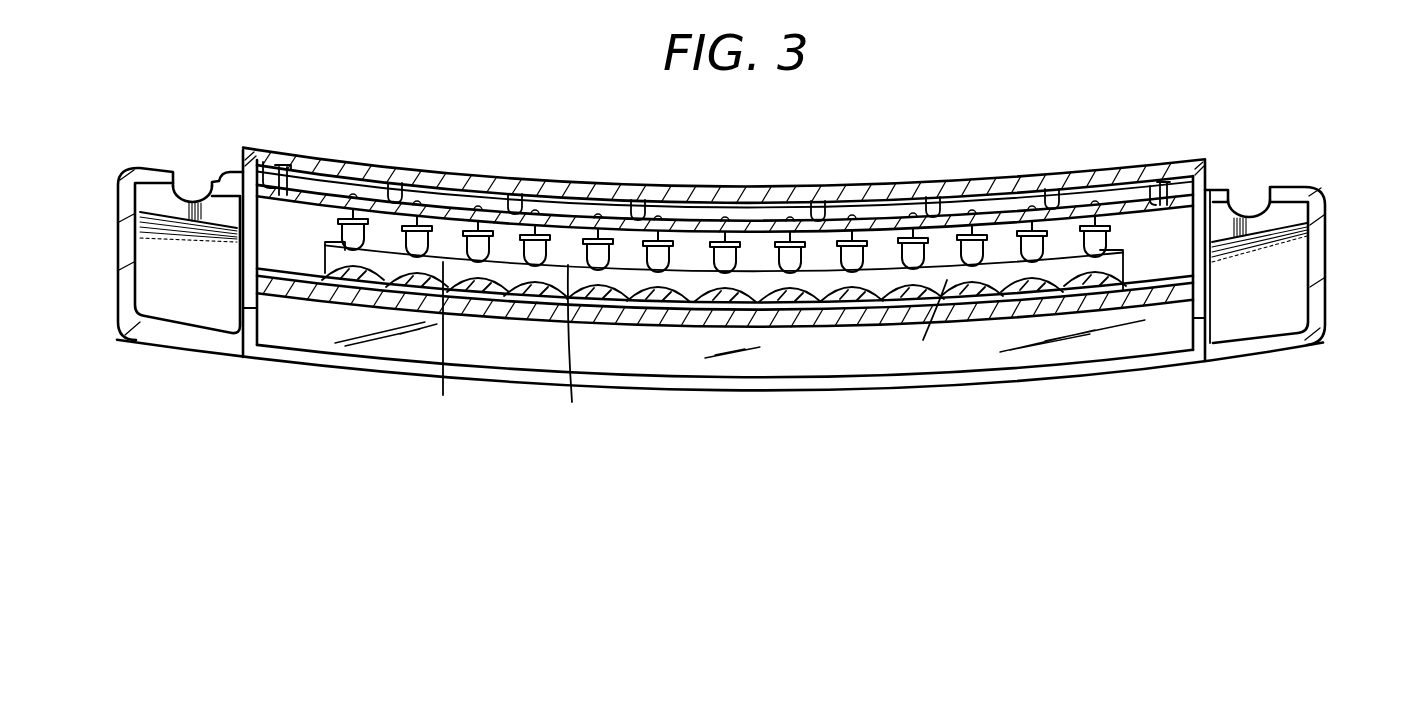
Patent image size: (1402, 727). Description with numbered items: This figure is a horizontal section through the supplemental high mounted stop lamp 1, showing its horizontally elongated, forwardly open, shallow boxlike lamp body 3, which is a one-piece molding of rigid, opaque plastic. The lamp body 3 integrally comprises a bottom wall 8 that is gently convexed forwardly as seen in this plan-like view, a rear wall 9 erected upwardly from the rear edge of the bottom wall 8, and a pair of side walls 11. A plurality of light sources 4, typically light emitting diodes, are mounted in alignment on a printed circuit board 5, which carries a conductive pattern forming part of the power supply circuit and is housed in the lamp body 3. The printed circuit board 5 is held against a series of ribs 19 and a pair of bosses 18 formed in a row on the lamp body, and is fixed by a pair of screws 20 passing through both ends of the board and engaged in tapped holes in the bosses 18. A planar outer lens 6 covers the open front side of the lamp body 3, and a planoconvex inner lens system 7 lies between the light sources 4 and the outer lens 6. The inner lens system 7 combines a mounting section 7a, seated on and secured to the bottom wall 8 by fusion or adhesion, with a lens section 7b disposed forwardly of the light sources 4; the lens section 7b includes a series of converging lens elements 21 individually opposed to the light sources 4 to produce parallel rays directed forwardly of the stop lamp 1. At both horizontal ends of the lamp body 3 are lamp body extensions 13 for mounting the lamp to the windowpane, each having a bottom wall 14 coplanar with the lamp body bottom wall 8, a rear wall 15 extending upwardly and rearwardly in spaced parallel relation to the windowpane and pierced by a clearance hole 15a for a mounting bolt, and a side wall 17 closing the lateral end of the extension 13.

The supplemental high mounted stop lamp 1 is at (889, 148).
The lamp body 3 is at (603, 182).
The light sources 4 is at (330, 248).
The printed circuit board 5 is at (755, 223).
The outer lens 6 is at (740, 367).
The inner lens system 7 is at (808, 307).
The mounting section 7a is at (327, 252).
The lens section 7b is at (652, 300).
The bottom wall 8 is at (318, 213).
The rear wall 9 is at (565, 178).
The side walls 11 is at (243, 290).
The lamp body extensions 13 is at (132, 166).
The bottom wall 14 is at (162, 305).
The rear wall 15 is at (177, 212).
The clearance hole 15a is at (189, 195).
The side wall 17 is at (121, 233).
The bosses 18 is at (303, 172).
The ribs 19 is at (513, 196).
The screws 20 is at (292, 200).
The converging lens elements 21 is at (685, 350).